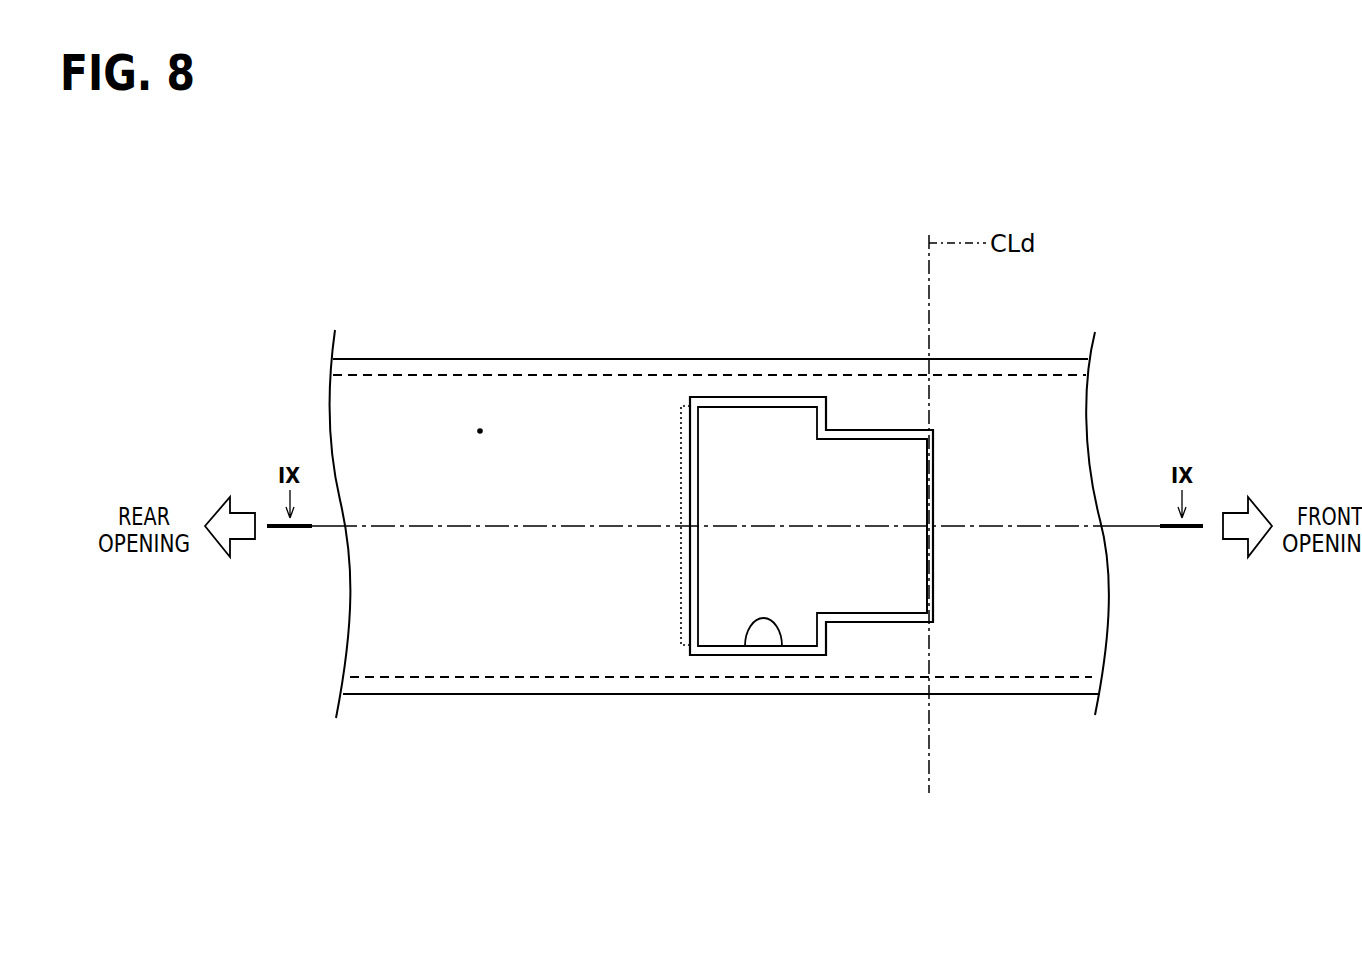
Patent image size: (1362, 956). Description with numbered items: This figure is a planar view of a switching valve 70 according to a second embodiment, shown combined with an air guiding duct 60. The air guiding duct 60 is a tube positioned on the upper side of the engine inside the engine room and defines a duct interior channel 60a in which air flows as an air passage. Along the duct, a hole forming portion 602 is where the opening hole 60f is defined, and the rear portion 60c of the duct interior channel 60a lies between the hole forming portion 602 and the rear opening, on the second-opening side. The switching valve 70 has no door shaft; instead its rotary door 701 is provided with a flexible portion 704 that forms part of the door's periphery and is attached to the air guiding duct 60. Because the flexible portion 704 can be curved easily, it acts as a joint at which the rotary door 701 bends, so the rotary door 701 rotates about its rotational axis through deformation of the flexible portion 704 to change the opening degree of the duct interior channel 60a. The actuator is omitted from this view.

The air guiding duct 60 is at (372, 368).
The duct interior channel 60a is at (541, 376).
The rear portion 60c is at (480, 428).
The opening hole 60f is at (777, 650).
The hole forming portion 602 is at (813, 667).
The switching valve 70 is at (948, 478).
The rotary door 701 is at (732, 423).
The flexible portion 704 is at (935, 598).